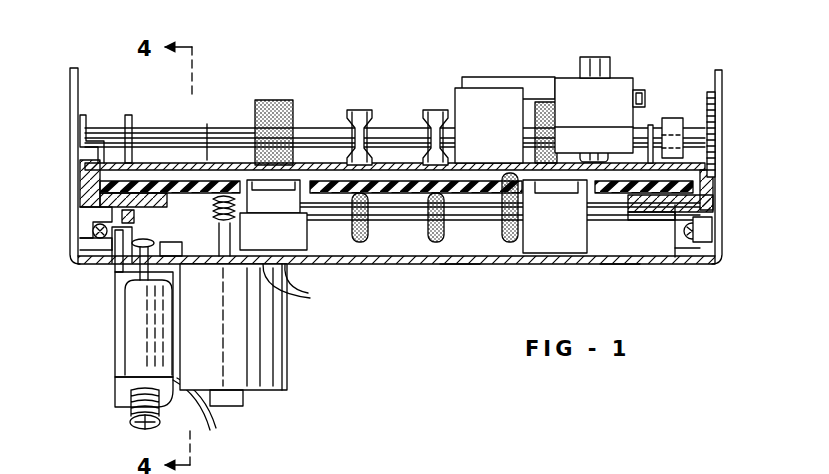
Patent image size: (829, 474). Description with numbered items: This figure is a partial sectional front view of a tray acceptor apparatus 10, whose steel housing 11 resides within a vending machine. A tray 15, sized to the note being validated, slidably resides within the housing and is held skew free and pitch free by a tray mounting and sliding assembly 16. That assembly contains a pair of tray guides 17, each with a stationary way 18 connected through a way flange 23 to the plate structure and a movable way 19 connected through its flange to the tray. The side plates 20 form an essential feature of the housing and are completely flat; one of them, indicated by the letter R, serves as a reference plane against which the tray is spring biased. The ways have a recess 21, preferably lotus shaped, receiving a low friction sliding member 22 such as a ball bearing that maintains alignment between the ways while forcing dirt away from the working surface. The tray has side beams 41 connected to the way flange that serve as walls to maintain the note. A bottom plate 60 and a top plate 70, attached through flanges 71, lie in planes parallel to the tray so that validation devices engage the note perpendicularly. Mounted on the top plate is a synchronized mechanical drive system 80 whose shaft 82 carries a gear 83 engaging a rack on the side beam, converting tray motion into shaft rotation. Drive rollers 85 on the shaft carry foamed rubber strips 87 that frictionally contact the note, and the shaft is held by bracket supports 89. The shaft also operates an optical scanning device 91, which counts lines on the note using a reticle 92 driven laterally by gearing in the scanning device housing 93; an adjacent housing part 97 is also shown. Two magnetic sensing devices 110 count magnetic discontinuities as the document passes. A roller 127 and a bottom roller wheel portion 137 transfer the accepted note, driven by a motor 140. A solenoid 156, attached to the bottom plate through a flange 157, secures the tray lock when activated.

The tray acceptor apparatus 10 is at (333, 66).
The housing 11 is at (69, 83).
The tray 15 is at (603, 198).
The tray mounting and sliding assembly 16 is at (699, 256).
The tray guide 17 is at (90, 250).
The stationary way 18 is at (107, 253).
The movable way 19 is at (116, 230).
The side plate 20 is at (69, 147).
The recess 21 is at (92, 240).
The low friction sliding member 22 is at (92, 230).
The flange 23 is at (85, 208).
The side beam 41 is at (82, 173).
The reference side plate R is at (72, 192).
The bottom plate 60 is at (477, 265).
The top plate 70 is at (208, 126).
The flange 71 is at (80, 117).
The synchronized mechanical drive system 80 is at (387, 123).
The shaft 82 is at (325, 133).
The gear 83 is at (708, 92).
The drive roller 85 is at (268, 101).
The foamed rubber strip 87 is at (254, 117).
The bracket support 89 is at (138, 97).
The optical scanning device 91 is at (563, 78).
The reticle 92 is at (598, 58).
The scanning device housing 93 is at (506, 125).
The housing 97 is at (622, 83).
The magnetic sensing device 110 is at (413, 216).
The pulley 127 is at (353, 112).
The wheel portion 137 is at (430, 233).
The motor 140 is at (283, 384).
The solenoid 156 is at (138, 360).
The flange 157 is at (108, 353).